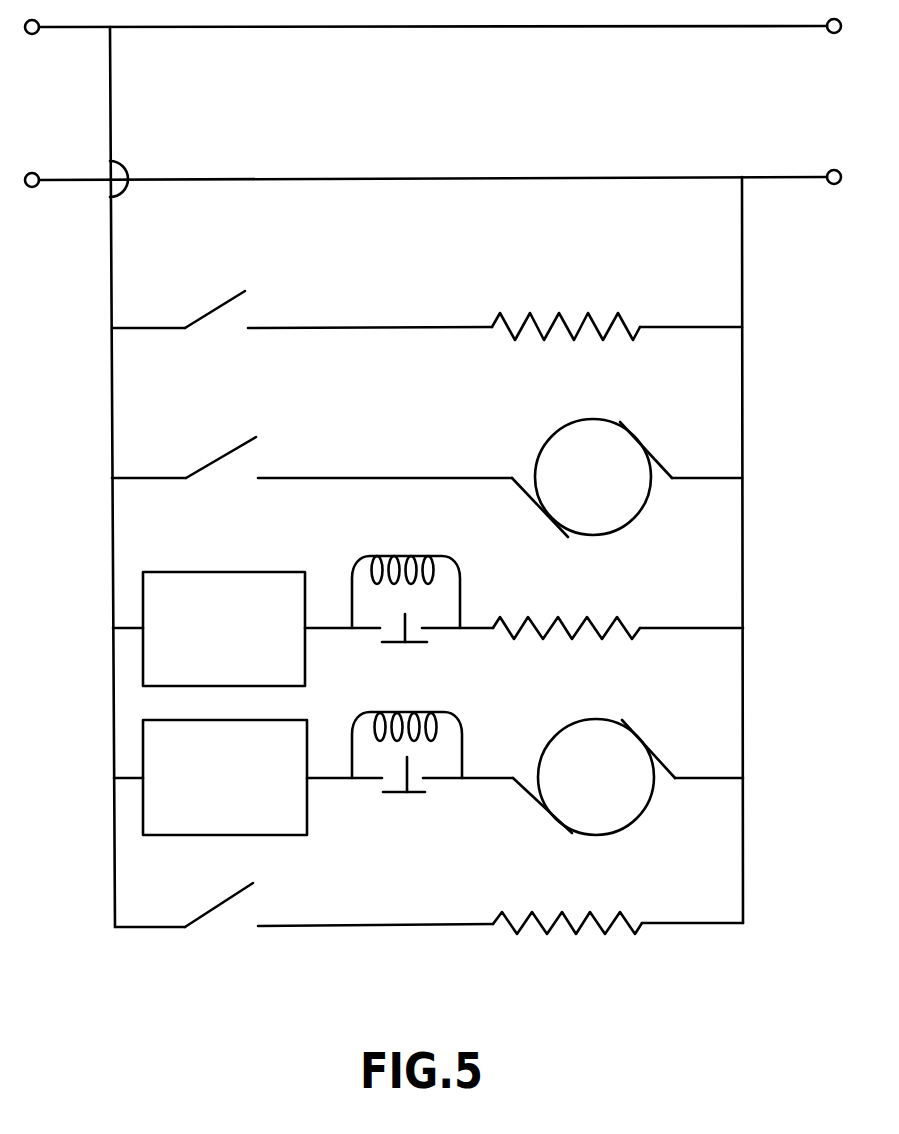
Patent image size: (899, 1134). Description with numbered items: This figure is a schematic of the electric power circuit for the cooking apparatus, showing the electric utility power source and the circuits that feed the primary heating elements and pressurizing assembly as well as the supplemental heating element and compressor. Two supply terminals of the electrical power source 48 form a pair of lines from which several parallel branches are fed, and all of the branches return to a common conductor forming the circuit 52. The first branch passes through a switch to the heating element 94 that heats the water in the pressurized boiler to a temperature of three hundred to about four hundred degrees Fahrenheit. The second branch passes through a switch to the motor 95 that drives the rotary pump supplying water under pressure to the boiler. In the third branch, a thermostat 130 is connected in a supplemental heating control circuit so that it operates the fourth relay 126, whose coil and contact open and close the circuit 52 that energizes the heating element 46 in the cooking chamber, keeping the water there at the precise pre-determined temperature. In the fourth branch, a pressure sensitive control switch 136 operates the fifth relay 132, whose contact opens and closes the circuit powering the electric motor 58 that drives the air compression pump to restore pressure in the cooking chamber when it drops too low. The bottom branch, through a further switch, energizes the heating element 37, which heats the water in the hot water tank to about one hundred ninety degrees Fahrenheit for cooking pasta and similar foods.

The electrical power source 48 is at (58, 29).
The heating element 94 is at (560, 314).
The motor 95 is at (582, 430).
The thermostat 130 is at (212, 572).
The fourth relay 126 is at (461, 582).
The heating element 46 is at (562, 620).
The circuit 52 is at (743, 577).
The pressure sensitive control switch 136 is at (202, 720).
The fifth relay 132 is at (462, 742).
The electric motor 58 is at (597, 720).
The heating element 37 is at (590, 912).